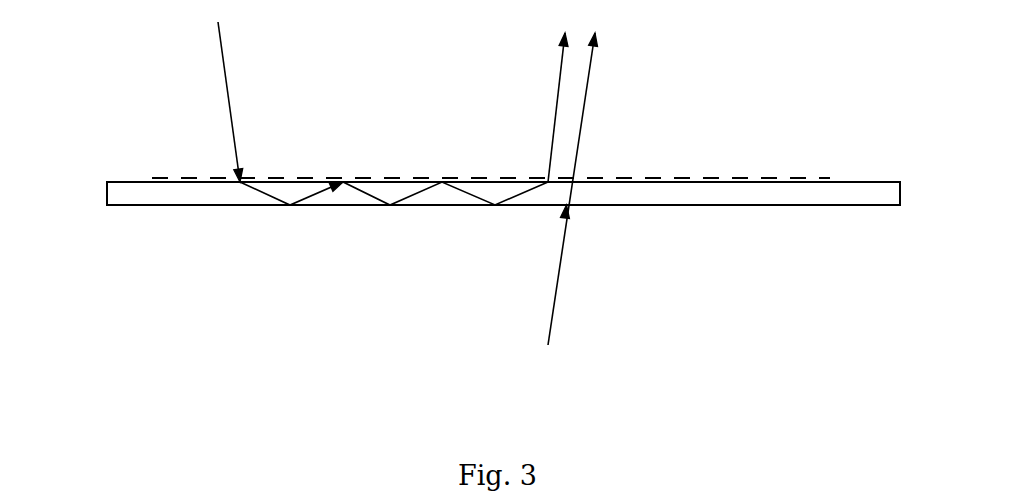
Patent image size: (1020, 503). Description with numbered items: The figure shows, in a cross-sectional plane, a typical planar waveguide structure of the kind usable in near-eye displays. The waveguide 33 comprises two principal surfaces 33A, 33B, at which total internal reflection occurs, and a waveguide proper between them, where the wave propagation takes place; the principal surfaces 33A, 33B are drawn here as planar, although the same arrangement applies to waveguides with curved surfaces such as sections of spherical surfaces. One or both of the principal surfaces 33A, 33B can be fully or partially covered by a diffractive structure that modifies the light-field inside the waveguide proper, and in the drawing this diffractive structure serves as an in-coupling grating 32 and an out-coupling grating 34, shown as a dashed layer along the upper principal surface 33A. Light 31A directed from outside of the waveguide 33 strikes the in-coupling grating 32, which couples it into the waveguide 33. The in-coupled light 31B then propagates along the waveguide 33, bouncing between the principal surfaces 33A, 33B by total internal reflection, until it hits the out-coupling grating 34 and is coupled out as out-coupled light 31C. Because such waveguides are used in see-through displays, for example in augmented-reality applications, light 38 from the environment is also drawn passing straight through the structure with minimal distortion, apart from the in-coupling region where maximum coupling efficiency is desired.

The light directed from outside of the waveguide 31A is at (223, 52).
The in-coupled light 31B is at (407, 197).
The out-coupled light 31C is at (558, 72).
The in-coupling grating 32 is at (197, 182).
The waveguide 33 is at (335, 207).
The principal surface 33A is at (130, 182).
The principal surface 33B is at (130, 207).
The out-coupling grating 34 is at (688, 178).
The light from the environment 38 is at (558, 272).